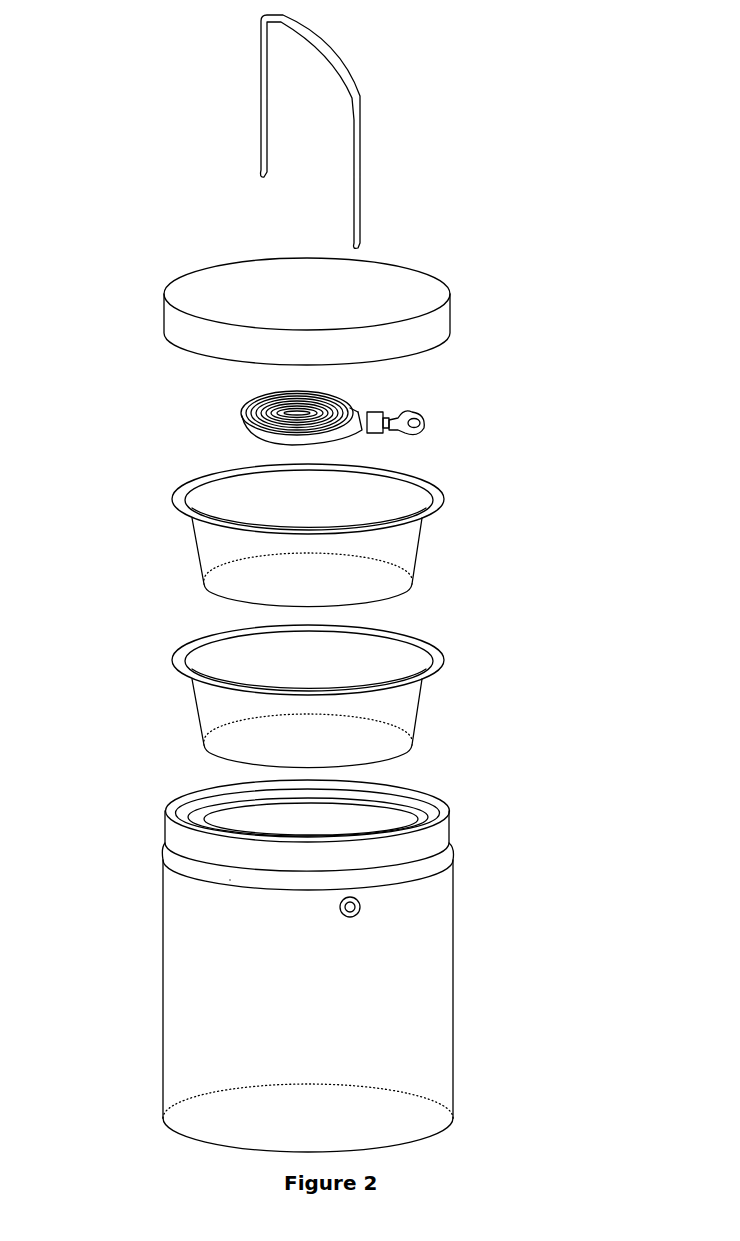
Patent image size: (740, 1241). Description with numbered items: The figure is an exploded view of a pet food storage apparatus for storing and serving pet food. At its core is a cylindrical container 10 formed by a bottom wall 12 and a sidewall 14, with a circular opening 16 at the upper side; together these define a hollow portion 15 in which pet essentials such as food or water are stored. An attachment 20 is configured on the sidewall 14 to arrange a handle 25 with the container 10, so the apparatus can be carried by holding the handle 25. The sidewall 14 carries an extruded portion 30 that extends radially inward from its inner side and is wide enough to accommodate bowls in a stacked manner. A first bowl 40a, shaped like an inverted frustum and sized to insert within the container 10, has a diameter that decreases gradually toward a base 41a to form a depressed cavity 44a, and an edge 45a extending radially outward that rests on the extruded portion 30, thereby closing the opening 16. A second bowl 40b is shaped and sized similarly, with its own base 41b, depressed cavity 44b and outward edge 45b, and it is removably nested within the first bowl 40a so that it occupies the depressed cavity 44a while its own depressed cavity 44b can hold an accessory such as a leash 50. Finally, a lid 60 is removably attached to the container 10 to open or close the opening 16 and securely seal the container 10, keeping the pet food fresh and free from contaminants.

The container 10 is at (293, 957).
The bottom wall 12 is at (178, 1103).
The sidewall 14 is at (453, 990).
The hollow portion 15 is at (312, 948).
The opening 16 is at (365, 818).
The attachment 20 is at (360, 903).
The handle 25 is at (358, 130).
The extruded portion 30 is at (428, 818).
The first bowl 40a is at (322, 692).
The second bowl 40b is at (309, 531).
The base 41a is at (213, 734).
The base 41b is at (213, 572).
The depressed cavity 44a is at (271, 675).
The depressed cavity 44b is at (290, 503).
The edge 45a is at (442, 654).
The edge 45b is at (440, 490).
The leash 50 is at (372, 398).
The lid 60 is at (452, 322).